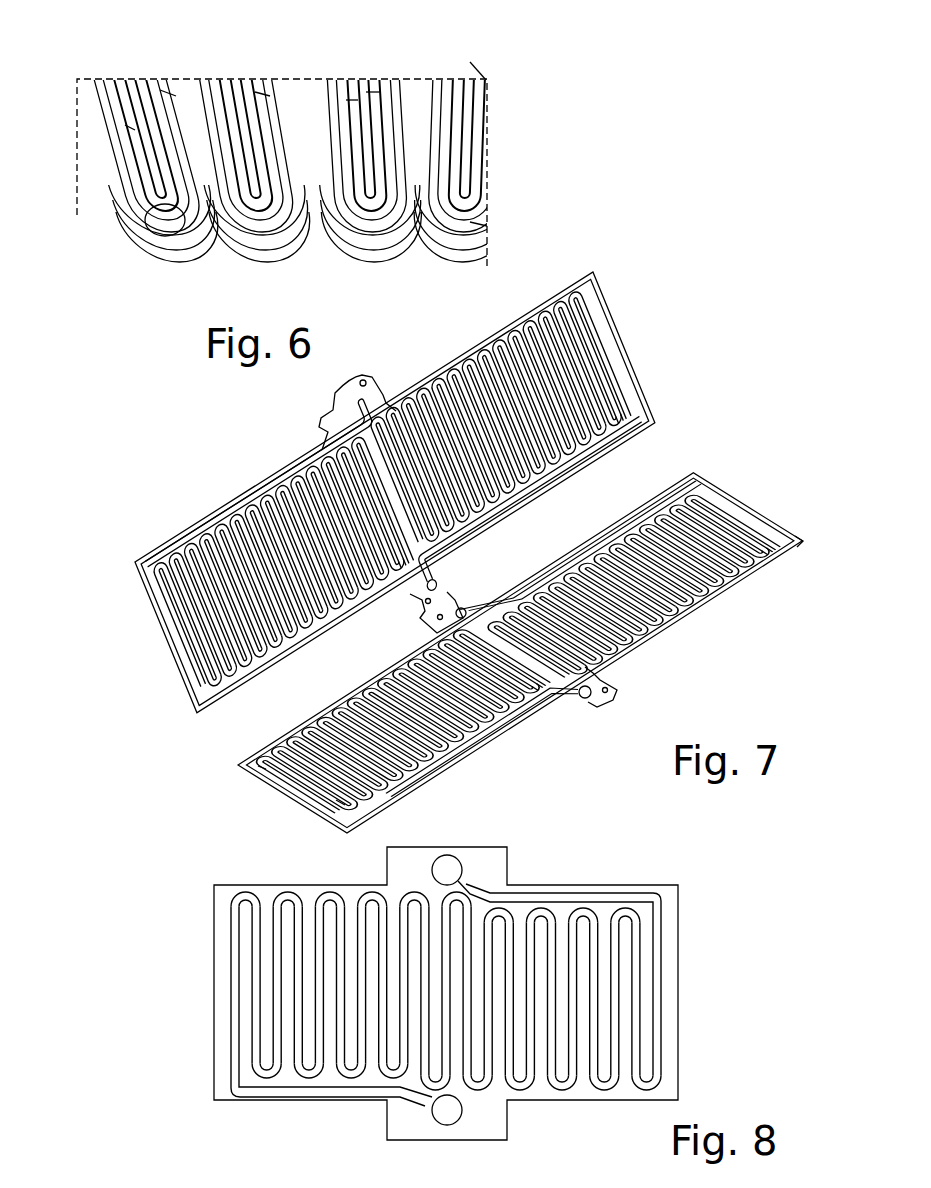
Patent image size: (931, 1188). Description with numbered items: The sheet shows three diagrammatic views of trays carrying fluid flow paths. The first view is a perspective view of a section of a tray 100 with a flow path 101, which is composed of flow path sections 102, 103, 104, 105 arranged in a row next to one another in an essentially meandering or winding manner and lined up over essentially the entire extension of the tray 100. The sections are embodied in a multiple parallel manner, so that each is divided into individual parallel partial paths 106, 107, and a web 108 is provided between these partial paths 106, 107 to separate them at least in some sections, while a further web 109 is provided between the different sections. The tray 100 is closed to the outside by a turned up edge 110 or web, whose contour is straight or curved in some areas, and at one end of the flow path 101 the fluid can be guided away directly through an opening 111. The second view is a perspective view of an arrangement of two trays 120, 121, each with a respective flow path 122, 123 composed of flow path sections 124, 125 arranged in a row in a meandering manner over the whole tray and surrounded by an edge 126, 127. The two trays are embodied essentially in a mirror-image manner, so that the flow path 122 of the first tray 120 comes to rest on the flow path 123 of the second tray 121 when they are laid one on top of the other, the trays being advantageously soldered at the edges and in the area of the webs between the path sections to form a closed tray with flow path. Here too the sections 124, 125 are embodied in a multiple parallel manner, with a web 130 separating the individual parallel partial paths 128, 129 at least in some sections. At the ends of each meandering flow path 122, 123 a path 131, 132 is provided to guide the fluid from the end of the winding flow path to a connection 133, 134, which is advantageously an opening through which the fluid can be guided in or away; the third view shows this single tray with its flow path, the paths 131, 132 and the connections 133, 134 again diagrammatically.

In FIG. 6, the tray 100 is at (466, 62).
In FIG. 6, the flow path 101 is at (205, 101).
In FIG. 6, the flow path section 102 is at (130, 128).
In FIG. 6, the flow path section 103 is at (247, 194).
In FIG. 6, the flow path section 104 is at (263, 93).
In FIG. 6, the flow path section 105 is at (363, 185).
In FIG. 6, the partial path 106 is at (403, 130).
In FIG. 6, the partial path 107 is at (352, 100).
In FIG. 6, the web 108 is at (373, 90).
In FIG. 6, the web 109 is at (168, 93).
In FIG. 6, the edge 110 is at (474, 224).
In FIG. 6, the opening 111 is at (160, 223).
In FIG. 7, the first tray 120 is at (613, 313).
In FIG. 7, the second tray 121 is at (730, 492).
In FIG. 7, the flow path 122 is at (245, 522).
In FIG. 7, the flow path 123 is at (632, 530).
In FIG. 8, the flow path 123 is at (680, 990).
In FIG. 7, the flow path section 124 is at (592, 362).
In FIG. 7, the flow path section 125 is at (740, 580).
In FIG. 7, the edge 126 is at (800, 541).
In FIG. 7, the edge 127 is at (652, 425).
In FIG. 7, the partial path 128 is at (262, 767).
In FIG. 7, the partial path 129 is at (320, 782).
In FIG. 7, the web 130 is at (340, 802).
In FIG. 7, the path 131 is at (520, 715).
In FIG. 8, the path 131 is at (302, 1097).
In FIG. 7, the path 132 is at (550, 580).
In FIG. 8, the path 132 is at (540, 893).
In FIG. 7, the connection 133 is at (592, 696).
In FIG. 8, the connection 133 is at (447, 1113).
In FIG. 7, the connection 134 is at (465, 608).
In FIG. 8, the connection 134 is at (447, 862).